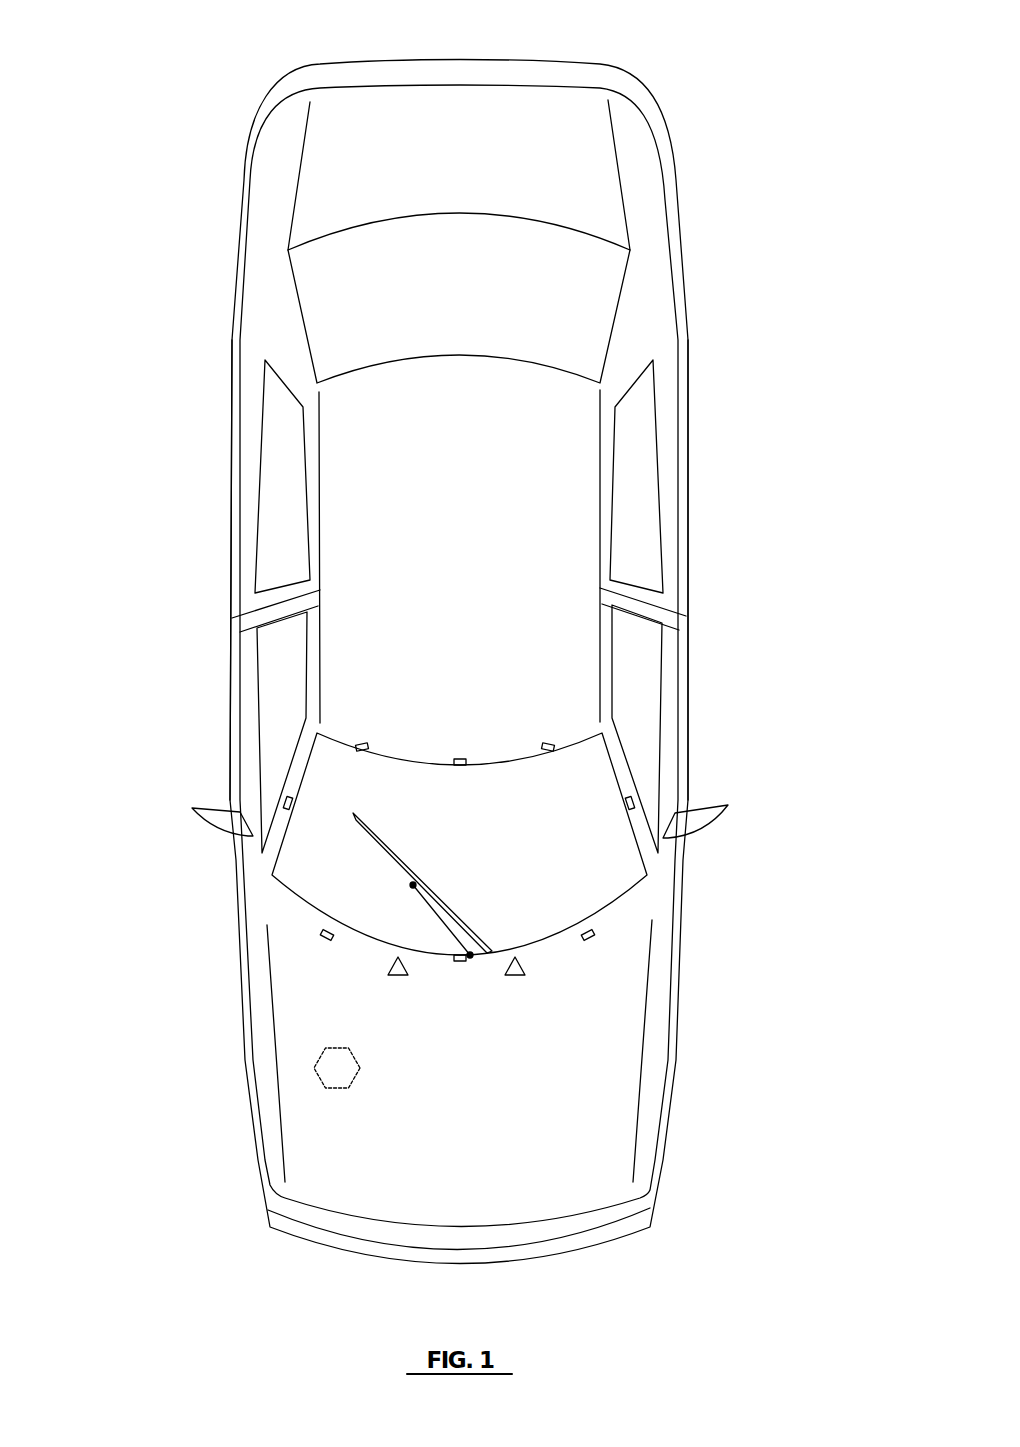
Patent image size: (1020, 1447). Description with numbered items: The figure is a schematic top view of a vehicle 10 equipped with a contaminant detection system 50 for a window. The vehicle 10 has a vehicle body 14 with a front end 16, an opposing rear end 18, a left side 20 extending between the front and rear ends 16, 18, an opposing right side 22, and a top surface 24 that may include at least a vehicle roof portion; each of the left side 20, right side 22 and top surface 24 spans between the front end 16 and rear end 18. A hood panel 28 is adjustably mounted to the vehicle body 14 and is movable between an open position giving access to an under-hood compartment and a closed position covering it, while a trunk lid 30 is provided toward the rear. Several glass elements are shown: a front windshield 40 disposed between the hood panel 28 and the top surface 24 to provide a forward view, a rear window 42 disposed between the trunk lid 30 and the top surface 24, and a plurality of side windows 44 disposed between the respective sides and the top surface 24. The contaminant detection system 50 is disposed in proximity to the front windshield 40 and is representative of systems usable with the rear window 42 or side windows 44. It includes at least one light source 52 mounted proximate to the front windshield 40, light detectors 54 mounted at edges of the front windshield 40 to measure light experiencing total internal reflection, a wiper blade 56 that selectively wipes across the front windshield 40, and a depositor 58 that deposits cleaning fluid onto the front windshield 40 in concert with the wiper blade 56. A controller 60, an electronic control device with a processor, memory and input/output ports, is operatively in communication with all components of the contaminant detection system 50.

The vehicle 10 is at (182, 106).
The vehicle body 14 is at (293, 355).
The front end 16 is at (533, 1266).
The rear end 18 is at (557, 52).
The left side 20 is at (731, 510).
The right side 22 is at (191, 568).
The top surface 24 is at (440, 491).
The hood panel 28 is at (310, 992).
The trunk lid 30 is at (353, 182).
The front windshield 40 is at (317, 777).
The rear window 42 is at (338, 293).
The side windows 44 is at (265, 668).
The contaminant detection system 50 is at (580, 958).
The light source 52 is at (548, 745).
The light detector 54 is at (285, 803).
The wiper blade 56 is at (408, 868).
The depositor 58 is at (398, 975).
The controller 60 is at (337, 1092).